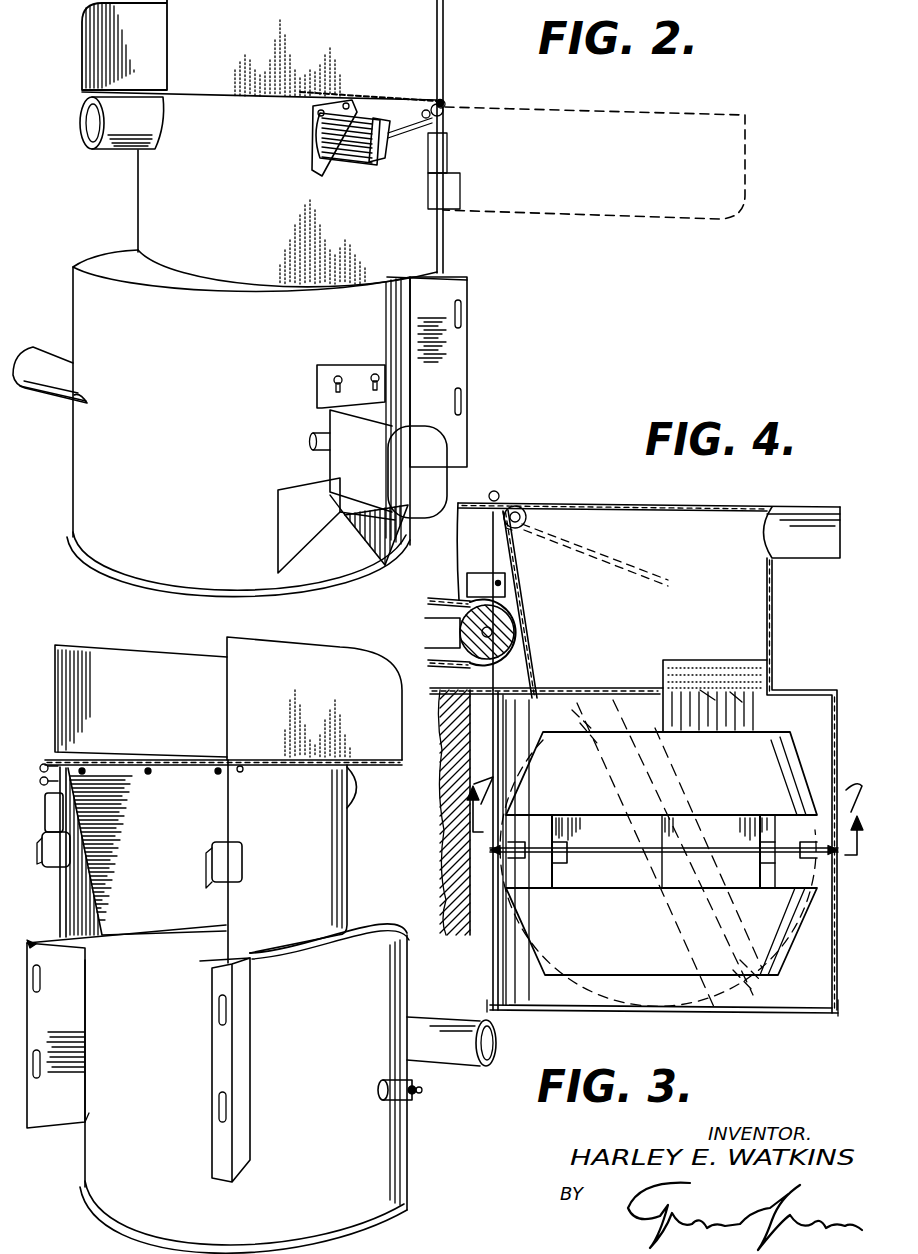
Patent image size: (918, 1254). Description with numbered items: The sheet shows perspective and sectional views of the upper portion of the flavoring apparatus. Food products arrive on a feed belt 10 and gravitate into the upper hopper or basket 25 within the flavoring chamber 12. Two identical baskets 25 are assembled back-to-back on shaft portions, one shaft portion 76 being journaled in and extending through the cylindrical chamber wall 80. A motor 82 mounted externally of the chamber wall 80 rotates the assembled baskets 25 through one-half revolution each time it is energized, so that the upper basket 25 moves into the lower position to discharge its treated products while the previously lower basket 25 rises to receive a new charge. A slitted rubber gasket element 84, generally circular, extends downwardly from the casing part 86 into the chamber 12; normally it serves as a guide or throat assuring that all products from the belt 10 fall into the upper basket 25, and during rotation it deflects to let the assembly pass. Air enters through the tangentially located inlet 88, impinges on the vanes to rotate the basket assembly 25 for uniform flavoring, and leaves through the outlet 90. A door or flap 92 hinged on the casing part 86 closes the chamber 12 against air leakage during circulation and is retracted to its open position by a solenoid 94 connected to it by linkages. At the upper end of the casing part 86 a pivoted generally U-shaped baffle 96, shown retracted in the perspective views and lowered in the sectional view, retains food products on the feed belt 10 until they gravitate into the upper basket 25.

In FIG. 4, the belt 10 is at (455, 598).
In FIG. 4, the flavoring chamber 12 is at (637, 708).
In FIG. 4, the hopper or basket 25 is at (783, 737).
In FIG. 3, the shaft portion 76 is at (408, 1097).
In FIG. 2, the cylindrical chamber wall 80 is at (97, 422).
In FIG. 3, the cylindrical chamber wall 80 is at (403, 1150).
In FIG. 2, the motor 82 is at (422, 489).
In FIG. 4, the slitted rubber gasket element 84 is at (755, 690).
In FIG. 2, the casing part 86 is at (148, 215).
In FIG. 4, the casing part 86 is at (768, 622).
In FIG. 3, the casing part 86 is at (340, 859).
In FIG. 2, the inlet 88 is at (37, 358).
In FIG. 3, the inlet 88 is at (465, 1068).
In FIG. 2, the outlet 90 is at (117, 140).
In FIG. 4, the outlet 90 is at (822, 506).
In FIG. 3, the outlet 90 is at (357, 783).
In FIG. 4, the door or flap 92 is at (518, 605).
In FIG. 3, the door or flap 92 is at (181, 833).
In FIG. 2, the solenoid 94 is at (370, 160).
In FIG. 2, the baffle 96 is at (441, 60).
In FIG. 4, the baffle 96 is at (468, 499).
In FIG. 3, the baffle 96 is at (361, 665).